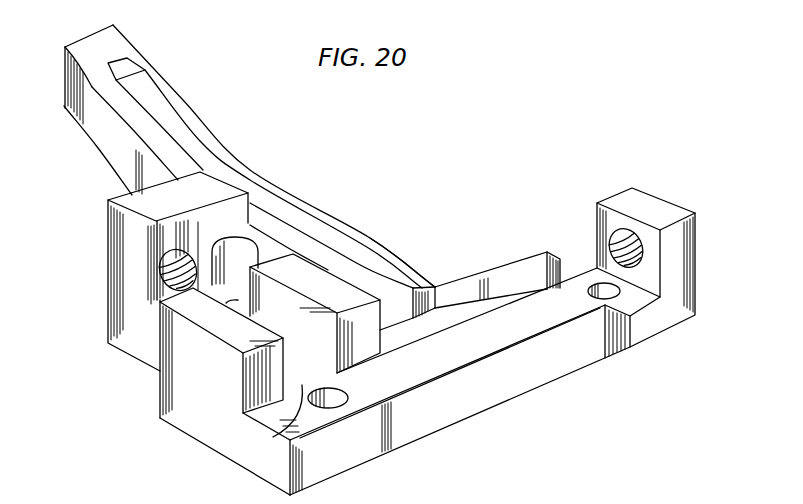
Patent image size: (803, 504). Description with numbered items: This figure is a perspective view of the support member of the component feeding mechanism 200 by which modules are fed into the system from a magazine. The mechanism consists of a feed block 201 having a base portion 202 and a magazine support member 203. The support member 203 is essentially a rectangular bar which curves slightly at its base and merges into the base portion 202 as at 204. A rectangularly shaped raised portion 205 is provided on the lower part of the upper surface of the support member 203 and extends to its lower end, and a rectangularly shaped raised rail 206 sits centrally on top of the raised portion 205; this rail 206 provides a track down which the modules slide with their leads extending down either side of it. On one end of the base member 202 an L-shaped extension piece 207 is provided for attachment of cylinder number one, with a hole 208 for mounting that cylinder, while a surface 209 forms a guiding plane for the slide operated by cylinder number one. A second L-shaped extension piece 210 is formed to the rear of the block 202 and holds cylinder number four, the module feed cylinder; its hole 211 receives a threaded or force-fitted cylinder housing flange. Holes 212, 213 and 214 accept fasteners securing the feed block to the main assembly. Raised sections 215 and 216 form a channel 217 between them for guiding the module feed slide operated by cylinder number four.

The component feeding mechanism 200 is at (138, 432).
The feed block 201 is at (563, 370).
The base portion 202 is at (442, 418).
The magazine support member 203 is at (112, 38).
The curved merging region 204 is at (383, 256).
The raised portion 205 is at (188, 123).
The raised rail 206 is at (153, 108).
The L-shaped extension piece 207 is at (657, 205).
The hole 208 is at (622, 248).
The guiding surface 209 is at (487, 353).
The second L-shaped extension piece 210 is at (115, 250).
The hole 211 is at (170, 284).
The hole 212 is at (236, 303).
The hole 213 is at (337, 406).
The hole 214 is at (615, 297).
The raised section 215 is at (207, 383).
The raised section 216 is at (327, 295).
The channel 217 is at (275, 437).